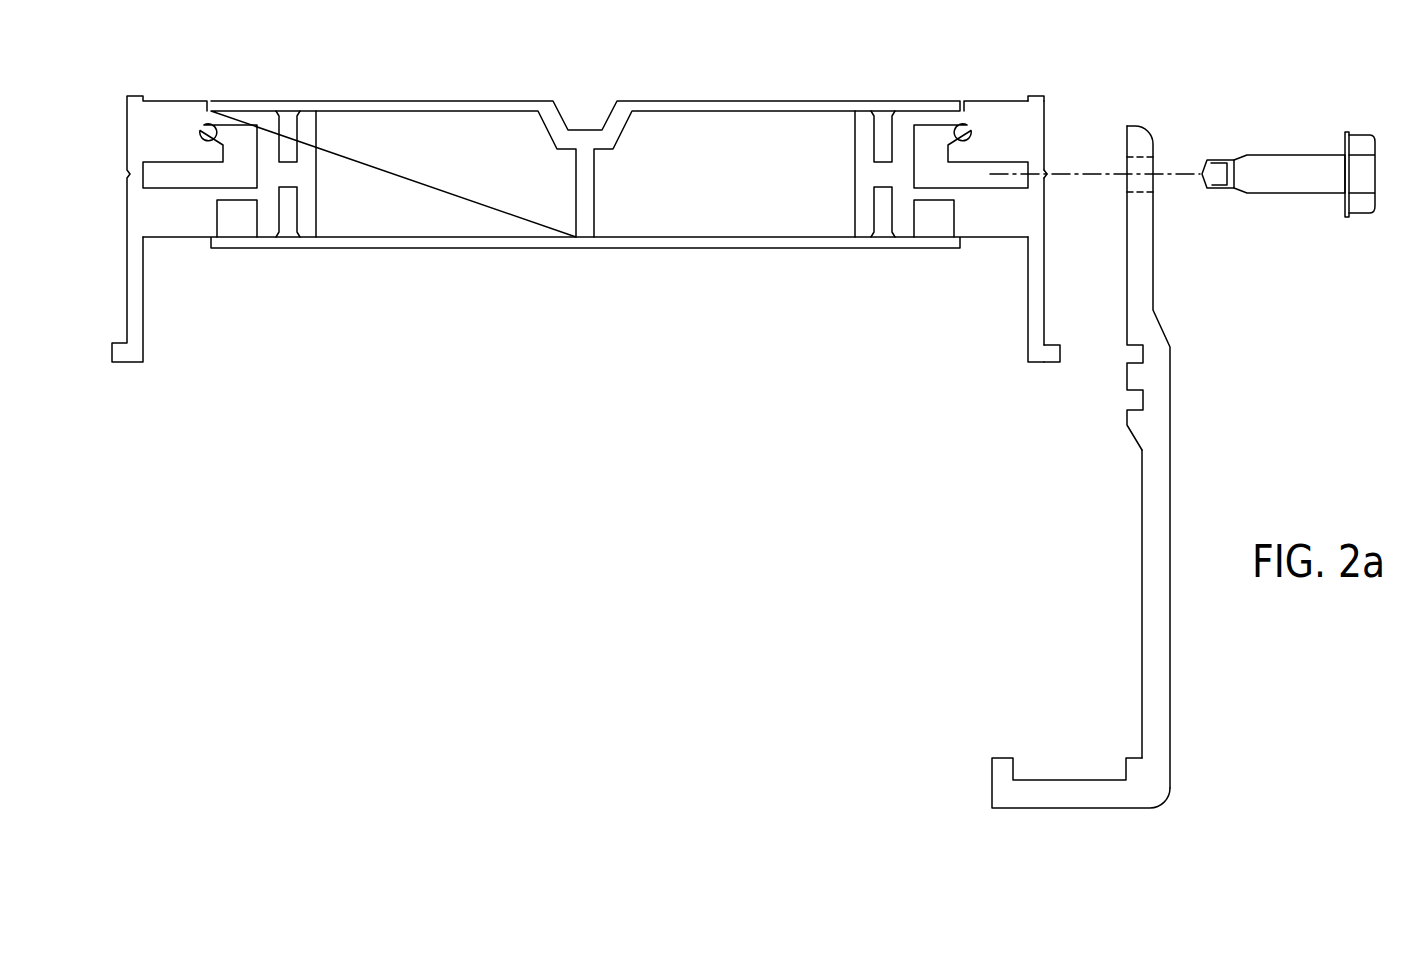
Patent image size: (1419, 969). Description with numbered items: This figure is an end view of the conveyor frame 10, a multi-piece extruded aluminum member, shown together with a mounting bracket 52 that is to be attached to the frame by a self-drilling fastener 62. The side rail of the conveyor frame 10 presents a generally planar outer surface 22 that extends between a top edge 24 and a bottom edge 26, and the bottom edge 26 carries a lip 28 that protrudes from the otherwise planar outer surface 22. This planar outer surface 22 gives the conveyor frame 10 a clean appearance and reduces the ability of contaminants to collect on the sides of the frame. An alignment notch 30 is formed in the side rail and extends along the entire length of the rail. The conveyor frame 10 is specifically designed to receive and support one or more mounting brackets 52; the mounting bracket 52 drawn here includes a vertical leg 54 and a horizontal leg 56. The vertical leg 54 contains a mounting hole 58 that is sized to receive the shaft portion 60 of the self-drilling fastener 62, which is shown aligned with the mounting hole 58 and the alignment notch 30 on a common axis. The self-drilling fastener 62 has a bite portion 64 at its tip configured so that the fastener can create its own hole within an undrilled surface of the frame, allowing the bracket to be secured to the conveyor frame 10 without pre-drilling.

The conveyor frame 10 is at (656, 207).
The outer surface 22 is at (1045, 125).
The top edge 24 is at (1035, 96).
The bottom edge 26 is at (1038, 363).
The lip 28 is at (1050, 352).
The alignment notch 30 is at (1047, 174).
The mounting bracket 52 is at (1117, 459).
The vertical leg 54 is at (1145, 628).
The horizontal leg 56 is at (1062, 790).
The mounting hole 58 is at (1143, 172).
The shaft portion 60 is at (1294, 160).
The self-drilling fastener 62 is at (1375, 167).
The bite portion 64 is at (1218, 186).